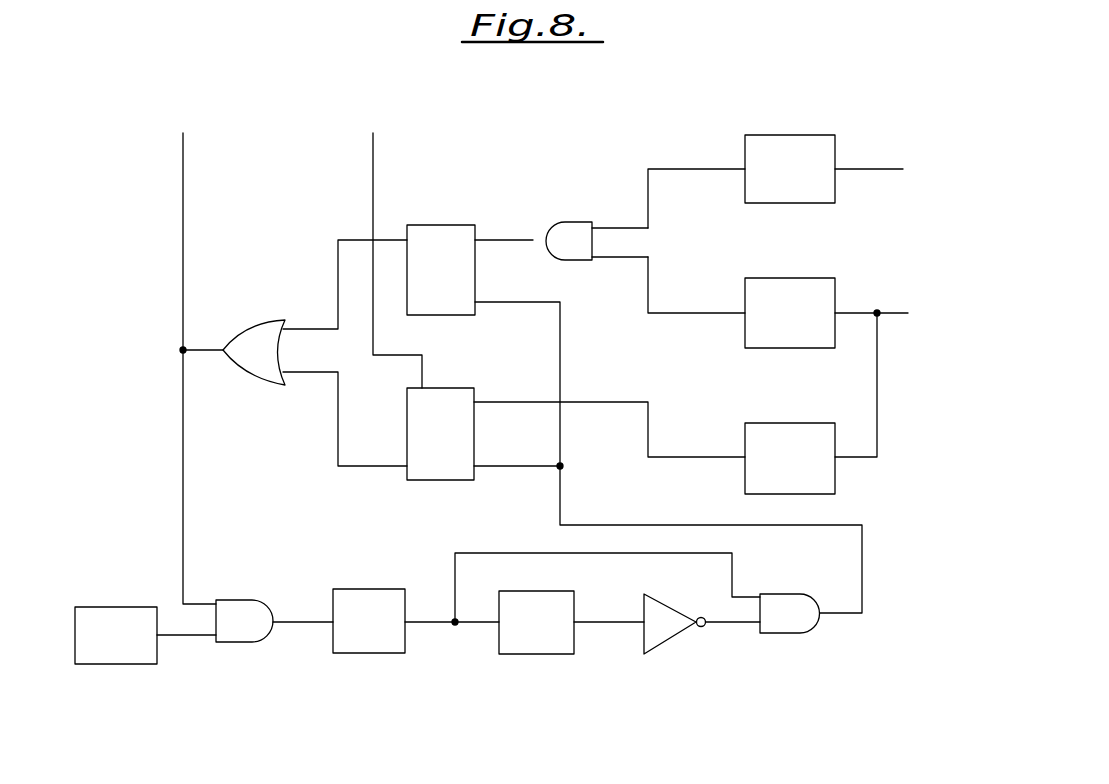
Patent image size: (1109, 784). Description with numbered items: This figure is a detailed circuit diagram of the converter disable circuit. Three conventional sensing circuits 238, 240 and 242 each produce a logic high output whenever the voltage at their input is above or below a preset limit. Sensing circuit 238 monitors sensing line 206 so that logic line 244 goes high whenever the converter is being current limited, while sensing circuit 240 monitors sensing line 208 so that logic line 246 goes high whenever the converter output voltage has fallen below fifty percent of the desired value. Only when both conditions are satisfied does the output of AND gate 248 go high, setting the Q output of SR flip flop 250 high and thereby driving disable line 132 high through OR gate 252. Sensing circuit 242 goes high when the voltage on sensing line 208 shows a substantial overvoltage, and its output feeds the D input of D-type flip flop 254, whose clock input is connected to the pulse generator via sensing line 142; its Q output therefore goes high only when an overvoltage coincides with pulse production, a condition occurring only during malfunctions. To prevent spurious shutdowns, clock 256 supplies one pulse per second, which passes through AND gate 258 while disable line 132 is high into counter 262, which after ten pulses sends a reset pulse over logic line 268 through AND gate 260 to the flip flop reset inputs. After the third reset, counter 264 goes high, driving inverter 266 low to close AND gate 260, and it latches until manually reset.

The disable line 132 is at (183, 156).
The sensing line 142 is at (373, 160).
The sensing line 206 is at (880, 170).
The sensing line 208 is at (897, 318).
The sensing circuit 238 is at (800, 135).
The sensing circuit 240 is at (838, 284).
The sensing circuit 242 is at (836, 428).
The logic line 244 is at (701, 170).
The logic line 246 is at (701, 314).
The AND gate 248 is at (568, 222).
The SR flip flop 250 is at (445, 225).
The OR gate 252 is at (258, 322).
The D-type flip flop 254 is at (475, 390).
The clock 256 is at (121, 607).
The AND gate 258 is at (248, 600).
The AND gate 260 is at (798, 594).
The counter 262 is at (373, 592).
The counter 264 is at (550, 592).
The inverter 266 is at (668, 600).
The logic line 268 is at (565, 553).